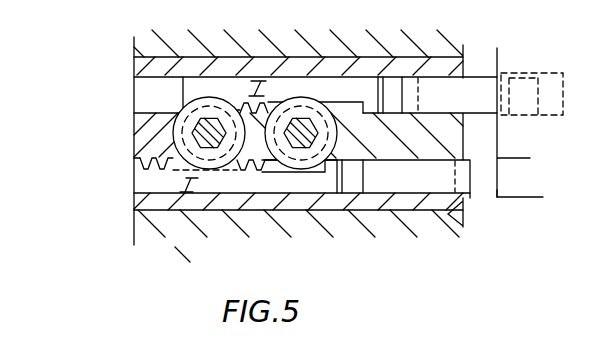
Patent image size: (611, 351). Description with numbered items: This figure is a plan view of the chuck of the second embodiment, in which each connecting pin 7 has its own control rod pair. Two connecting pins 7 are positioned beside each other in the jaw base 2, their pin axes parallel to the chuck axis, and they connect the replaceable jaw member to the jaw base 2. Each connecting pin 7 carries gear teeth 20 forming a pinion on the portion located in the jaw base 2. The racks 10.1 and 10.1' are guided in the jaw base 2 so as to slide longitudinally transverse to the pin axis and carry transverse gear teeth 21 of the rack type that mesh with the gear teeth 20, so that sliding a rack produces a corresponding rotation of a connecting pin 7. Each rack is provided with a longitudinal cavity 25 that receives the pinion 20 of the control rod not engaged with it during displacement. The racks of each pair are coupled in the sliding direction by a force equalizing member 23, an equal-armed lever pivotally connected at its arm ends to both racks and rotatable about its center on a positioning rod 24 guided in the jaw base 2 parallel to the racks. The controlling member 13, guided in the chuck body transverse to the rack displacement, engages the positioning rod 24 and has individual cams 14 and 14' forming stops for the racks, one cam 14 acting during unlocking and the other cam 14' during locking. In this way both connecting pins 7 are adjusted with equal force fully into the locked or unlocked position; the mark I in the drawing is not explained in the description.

The rack 10.1' is at (296, 82).
The rack 10.1 is at (302, 222).
The jaw base 2 is at (133, 136).
The transverse gear teeth 21 is at (148, 155).
The gear teeth 20 is at (245, 98).
The longitudinal cavity 25 is at (362, 103).
The connecting pin 7 is at (184, 113).
The gap I is at (223, 136).
The positioning rod 24 is at (440, 90).
The force equalizing member 23 is at (395, 90).
The controlling member 13 is at (540, 153).
The cam 14 is at (538, 80).
The cam 14' is at (519, 203).